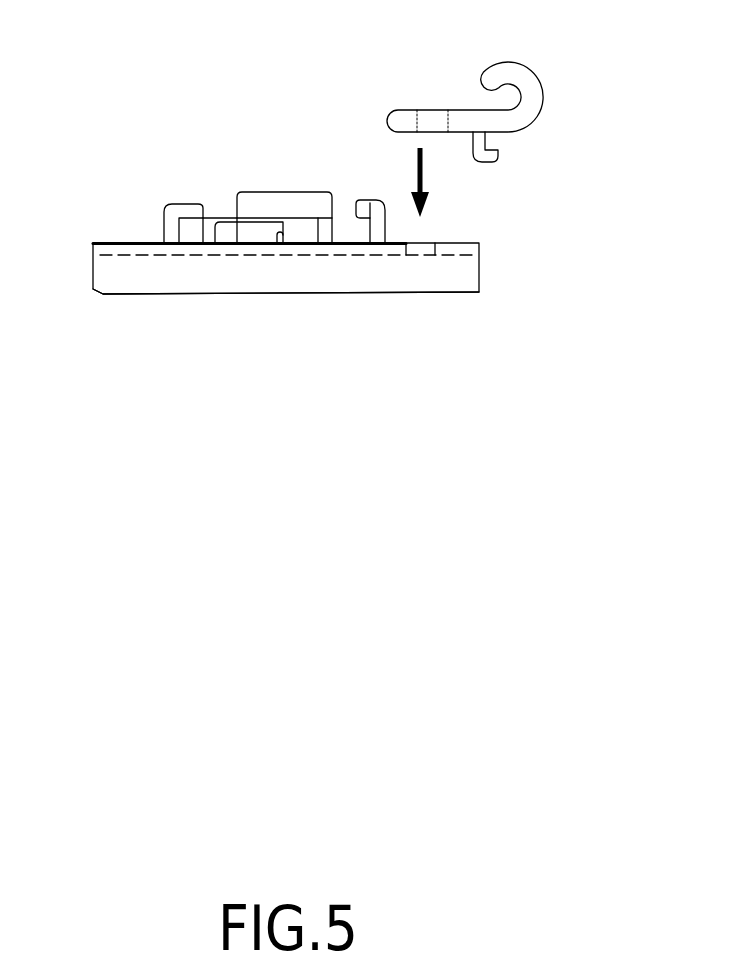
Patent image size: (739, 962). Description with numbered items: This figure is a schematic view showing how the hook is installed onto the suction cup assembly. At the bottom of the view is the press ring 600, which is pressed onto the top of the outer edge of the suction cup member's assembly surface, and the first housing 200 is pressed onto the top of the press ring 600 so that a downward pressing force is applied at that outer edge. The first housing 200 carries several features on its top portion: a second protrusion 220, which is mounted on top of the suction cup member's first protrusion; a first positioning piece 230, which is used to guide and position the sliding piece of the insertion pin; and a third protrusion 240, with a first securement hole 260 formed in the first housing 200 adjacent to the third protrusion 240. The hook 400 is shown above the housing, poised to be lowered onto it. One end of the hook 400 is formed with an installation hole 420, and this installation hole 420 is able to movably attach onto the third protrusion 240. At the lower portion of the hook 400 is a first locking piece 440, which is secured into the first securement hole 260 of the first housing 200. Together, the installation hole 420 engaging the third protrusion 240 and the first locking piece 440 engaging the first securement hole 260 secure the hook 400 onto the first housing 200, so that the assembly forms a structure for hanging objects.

The first housing 200 is at (155, 248).
The second protrusion 220 is at (262, 198).
The first positioning piece 230 is at (193, 206).
The third protrusion 240 is at (378, 202).
The first securement hole 260 is at (423, 254).
The hook 400 is at (495, 72).
The installation hole 420 is at (422, 110).
The first locking piece 440 is at (492, 160).
The press ring 600 is at (138, 296).